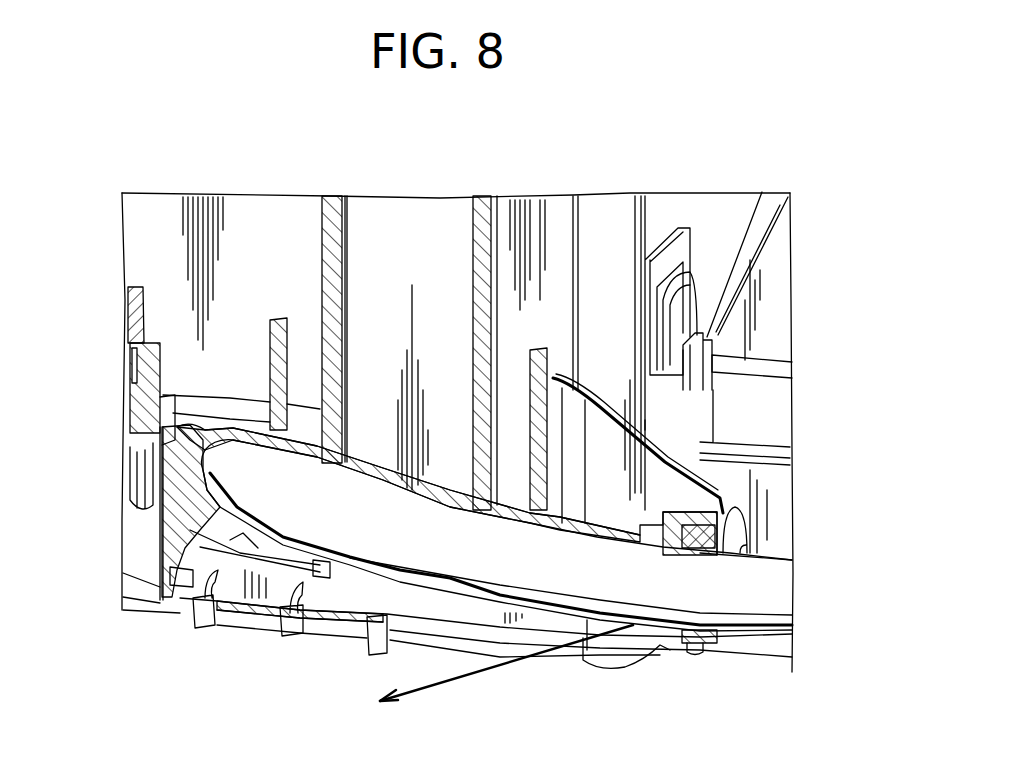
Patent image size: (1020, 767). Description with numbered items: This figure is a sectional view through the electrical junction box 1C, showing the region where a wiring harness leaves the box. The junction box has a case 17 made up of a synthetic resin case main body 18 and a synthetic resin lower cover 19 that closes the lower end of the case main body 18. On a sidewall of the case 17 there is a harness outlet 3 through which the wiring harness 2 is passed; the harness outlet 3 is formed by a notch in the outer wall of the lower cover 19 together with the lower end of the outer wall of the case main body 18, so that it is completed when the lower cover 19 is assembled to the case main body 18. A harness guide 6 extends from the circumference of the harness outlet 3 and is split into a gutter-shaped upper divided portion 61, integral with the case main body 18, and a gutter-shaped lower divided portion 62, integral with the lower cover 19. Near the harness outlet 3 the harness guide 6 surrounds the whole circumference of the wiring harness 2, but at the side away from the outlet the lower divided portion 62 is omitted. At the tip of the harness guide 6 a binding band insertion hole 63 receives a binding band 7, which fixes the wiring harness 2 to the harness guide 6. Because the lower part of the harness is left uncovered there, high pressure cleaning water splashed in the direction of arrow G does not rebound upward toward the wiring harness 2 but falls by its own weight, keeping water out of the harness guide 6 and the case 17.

The electrical junction box 1C is at (814, 144).
The case 17 is at (150, 222).
The case main body 18 is at (152, 270).
The upper divided portion 61 is at (256, 433).
The harness guide 6 is at (606, 522).
The wiring harness 2 is at (772, 563).
The binding band insertion hole 63 is at (713, 497).
The harness outlet 3 is at (220, 523).
The lower cover 19 is at (147, 590).
The lower divided portion 62 is at (260, 620).
The binding band 7 is at (702, 645).
The arrow G is at (538, 647).